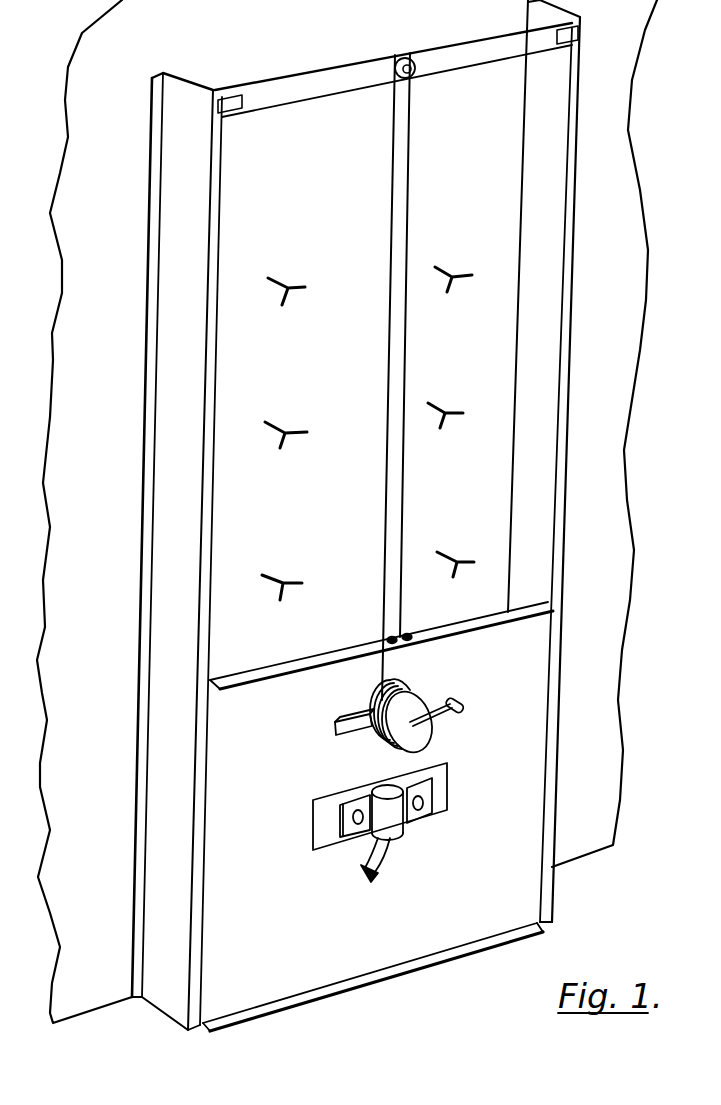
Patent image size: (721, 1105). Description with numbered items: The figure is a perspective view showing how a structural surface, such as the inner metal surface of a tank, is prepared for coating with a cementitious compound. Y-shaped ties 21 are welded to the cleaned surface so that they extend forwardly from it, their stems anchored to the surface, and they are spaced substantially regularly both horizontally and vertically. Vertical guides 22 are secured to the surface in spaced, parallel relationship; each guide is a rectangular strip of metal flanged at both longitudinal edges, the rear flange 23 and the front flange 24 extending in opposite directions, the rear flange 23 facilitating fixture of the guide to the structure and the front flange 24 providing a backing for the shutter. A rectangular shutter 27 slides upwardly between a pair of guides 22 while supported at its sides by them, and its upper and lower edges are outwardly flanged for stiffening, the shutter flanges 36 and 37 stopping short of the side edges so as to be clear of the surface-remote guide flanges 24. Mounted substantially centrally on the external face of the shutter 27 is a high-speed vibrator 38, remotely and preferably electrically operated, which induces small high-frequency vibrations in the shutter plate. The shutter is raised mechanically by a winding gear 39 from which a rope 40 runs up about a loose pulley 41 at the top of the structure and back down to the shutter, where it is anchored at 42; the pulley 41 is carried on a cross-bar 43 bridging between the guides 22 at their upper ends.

The Y-shaped ties 21 is at (292, 293).
The vertical guides 22 is at (165, 622).
The rear flange 23 is at (152, 433).
The front flange 24 is at (205, 488).
The shutter 27 is at (378, 816).
The upper shutter flange 36 is at (297, 667).
The lower shutter flange 37 is at (435, 957).
The high-speed vibrator 38 is at (397, 813).
The winding gear 39 is at (430, 727).
The rope 40 is at (380, 583).
The loose pulley 41 is at (404, 58).
The rope anchorage 42 is at (402, 635).
The cross-bar 43 is at (327, 72).